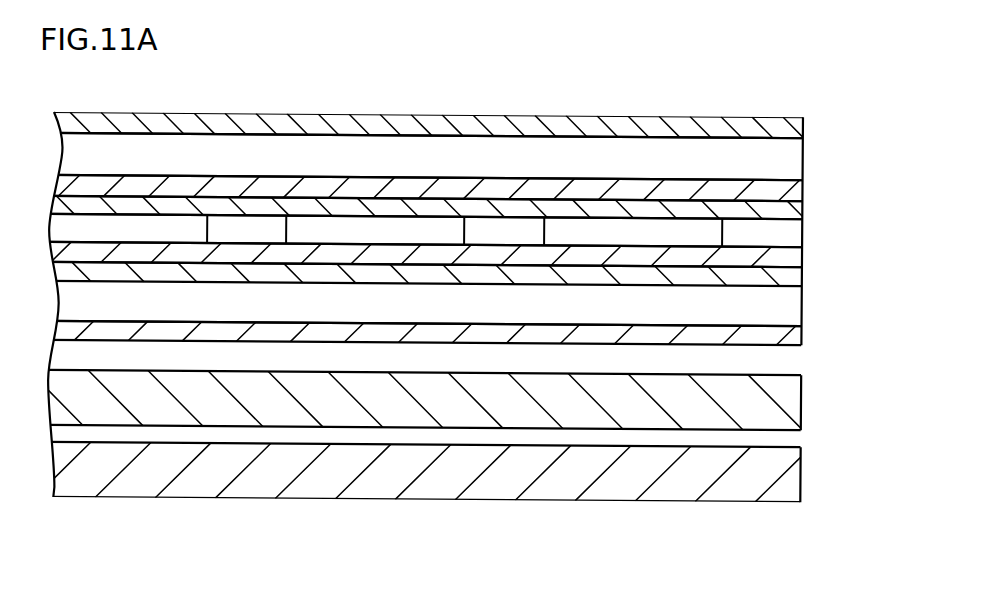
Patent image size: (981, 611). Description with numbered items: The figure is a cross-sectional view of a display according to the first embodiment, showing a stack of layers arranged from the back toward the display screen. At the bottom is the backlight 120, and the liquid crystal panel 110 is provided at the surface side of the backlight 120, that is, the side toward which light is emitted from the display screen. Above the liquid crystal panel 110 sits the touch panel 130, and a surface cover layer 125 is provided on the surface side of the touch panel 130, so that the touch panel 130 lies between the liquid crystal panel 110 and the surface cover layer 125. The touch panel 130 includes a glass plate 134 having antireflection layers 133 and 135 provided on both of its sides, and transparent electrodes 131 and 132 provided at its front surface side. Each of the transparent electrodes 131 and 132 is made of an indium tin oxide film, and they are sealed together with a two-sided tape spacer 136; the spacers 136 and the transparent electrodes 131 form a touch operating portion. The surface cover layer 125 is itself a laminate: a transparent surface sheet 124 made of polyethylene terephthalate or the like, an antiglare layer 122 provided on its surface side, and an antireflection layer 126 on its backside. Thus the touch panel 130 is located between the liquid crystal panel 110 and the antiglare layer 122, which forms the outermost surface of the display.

The liquid crystal panel 110 is at (803, 407).
The backlight 120 is at (803, 487).
The antiglare layer 122 is at (803, 128).
The transparent surface sheet 124 is at (803, 162).
The surface cover layer 125 is at (870, 90).
The antireflection layer 126 is at (803, 188).
The touch panel 130 is at (870, 182).
The transparent electrode 131 is at (803, 213).
The transparent electrode 132 is at (803, 246).
The antireflection layer 133 is at (803, 264).
The glass plate 134 is at (803, 314).
The antireflection layer 135 is at (803, 338).
The two-sided tape spacer 136 is at (248, 228).